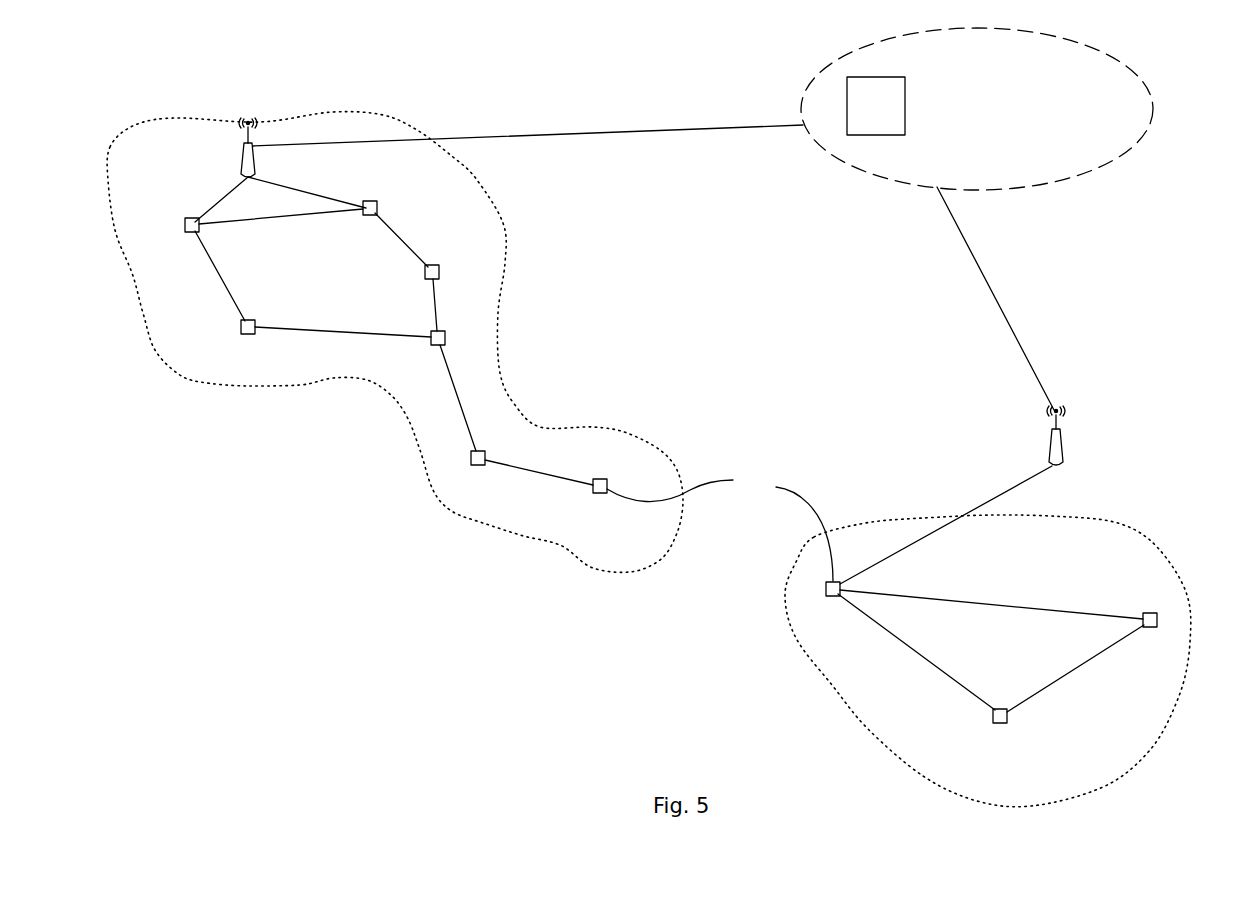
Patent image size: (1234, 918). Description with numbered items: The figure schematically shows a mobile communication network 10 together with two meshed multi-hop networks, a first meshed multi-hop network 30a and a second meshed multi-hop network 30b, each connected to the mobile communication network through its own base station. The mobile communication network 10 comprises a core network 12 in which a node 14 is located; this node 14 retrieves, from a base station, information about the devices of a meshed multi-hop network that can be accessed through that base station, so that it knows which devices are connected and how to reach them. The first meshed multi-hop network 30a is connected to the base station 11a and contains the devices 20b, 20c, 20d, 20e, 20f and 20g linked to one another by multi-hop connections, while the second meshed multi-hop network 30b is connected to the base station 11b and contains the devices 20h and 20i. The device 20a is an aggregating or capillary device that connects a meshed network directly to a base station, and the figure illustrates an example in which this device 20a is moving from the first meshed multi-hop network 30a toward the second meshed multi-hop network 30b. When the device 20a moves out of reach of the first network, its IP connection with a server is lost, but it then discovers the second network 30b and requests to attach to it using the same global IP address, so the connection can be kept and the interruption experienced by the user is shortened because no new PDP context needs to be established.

The mobile communication network 10 is at (598, 110).
The base station 11a is at (240, 152).
The base station 11b is at (1064, 438).
The core network 12 is at (1107, 163).
The node 14 is at (876, 106).
The device 20a is at (789, 535).
The device 20b is at (377, 201).
The device 20c is at (200, 218).
The device 20d is at (248, 334).
The device 20e is at (472, 468).
The device 20f is at (440, 264).
The device 20g is at (445, 338).
The device 20h is at (1008, 716).
The device 20i is at (1150, 613).
The first meshed multi-hop network 30a is at (240, 390).
The second meshed multi-hop network 30b is at (836, 675).